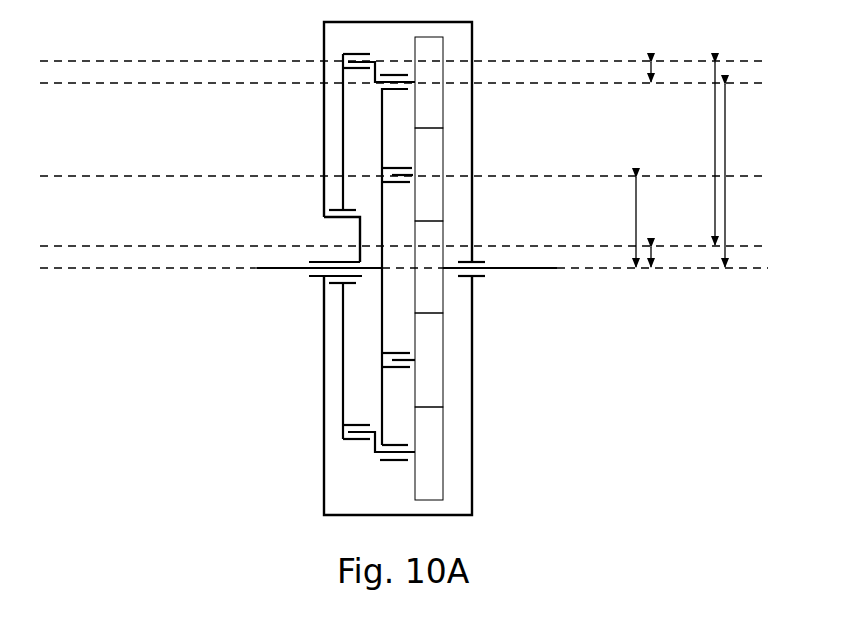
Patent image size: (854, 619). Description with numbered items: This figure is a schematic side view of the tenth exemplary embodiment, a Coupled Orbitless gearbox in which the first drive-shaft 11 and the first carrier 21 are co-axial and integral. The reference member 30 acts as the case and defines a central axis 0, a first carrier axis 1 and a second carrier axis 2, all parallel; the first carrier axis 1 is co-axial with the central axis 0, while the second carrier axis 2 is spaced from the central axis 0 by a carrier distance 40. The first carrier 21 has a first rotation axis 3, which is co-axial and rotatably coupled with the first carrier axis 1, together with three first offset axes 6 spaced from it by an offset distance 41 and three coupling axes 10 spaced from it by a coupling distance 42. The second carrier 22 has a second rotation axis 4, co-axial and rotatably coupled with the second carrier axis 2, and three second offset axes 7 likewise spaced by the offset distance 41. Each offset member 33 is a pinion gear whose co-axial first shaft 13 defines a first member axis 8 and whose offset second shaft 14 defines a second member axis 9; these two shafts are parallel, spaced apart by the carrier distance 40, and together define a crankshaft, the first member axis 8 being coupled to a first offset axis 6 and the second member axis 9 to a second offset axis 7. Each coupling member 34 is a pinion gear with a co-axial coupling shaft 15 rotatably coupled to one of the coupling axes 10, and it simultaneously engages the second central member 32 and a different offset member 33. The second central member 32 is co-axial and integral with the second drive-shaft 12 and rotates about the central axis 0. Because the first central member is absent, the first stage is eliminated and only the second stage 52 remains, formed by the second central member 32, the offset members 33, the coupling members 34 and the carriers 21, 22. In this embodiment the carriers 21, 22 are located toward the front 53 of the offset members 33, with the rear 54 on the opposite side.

The central axis 0 is at (404, 294).
The first carrier axis 1 is at (404, 294).
The second carrier axis 2 is at (404, 221).
The first rotation axis 3 is at (110, 268).
The second rotation axis 4 is at (110, 246).
The first offset axis 6 is at (404, 109).
The second offset axis 7 is at (404, 35).
The first member axis 8 is at (113, 83).
The second member axis 9 is at (113, 61).
The coupling axis 10 is at (143, 176).
The first drive-shaft 11 is at (287, 270).
The second drive-shaft 12 is at (520, 270).
The first shaft 13 is at (407, 445).
The second shaft 14 is at (368, 427).
The coupling shaft 15 is at (407, 360).
The first carrier 21 is at (382, 118).
The second carrier 22 is at (343, 160).
The reference member 30 is at (350, 513).
The second central member 32 is at (420, 238).
The offset member 33 is at (418, 62).
The coupling member 34 is at (420, 150).
The carrier distance 40 is at (655, 72).
The offset distance 41 is at (717, 135).
The coupling distance 42 is at (638, 223).
The second stage 52 is at (459, 383).
The front 53 is at (116, 336).
The rear 54 is at (654, 338).